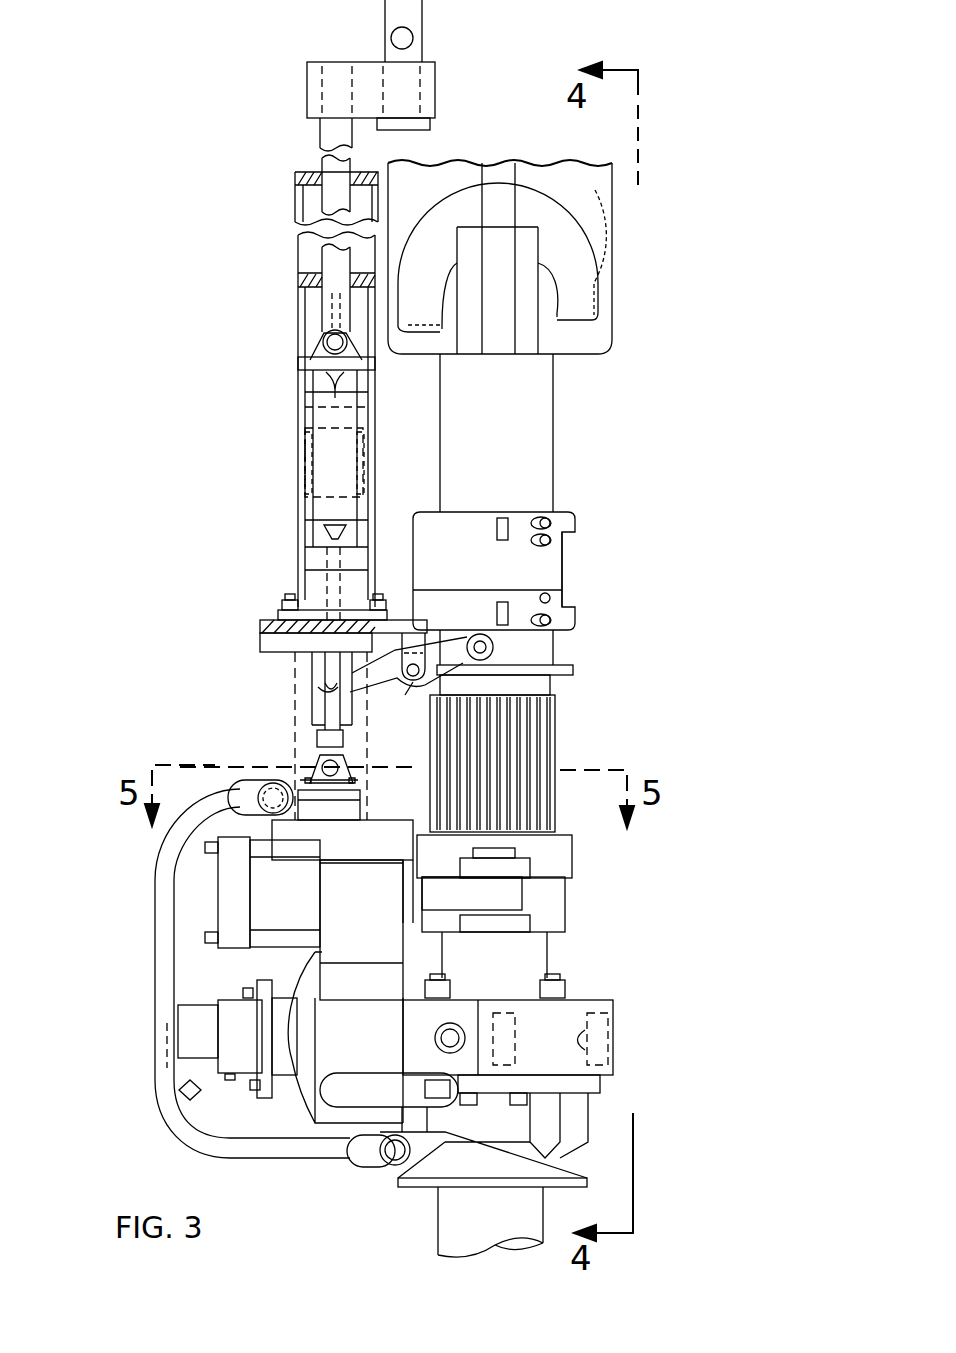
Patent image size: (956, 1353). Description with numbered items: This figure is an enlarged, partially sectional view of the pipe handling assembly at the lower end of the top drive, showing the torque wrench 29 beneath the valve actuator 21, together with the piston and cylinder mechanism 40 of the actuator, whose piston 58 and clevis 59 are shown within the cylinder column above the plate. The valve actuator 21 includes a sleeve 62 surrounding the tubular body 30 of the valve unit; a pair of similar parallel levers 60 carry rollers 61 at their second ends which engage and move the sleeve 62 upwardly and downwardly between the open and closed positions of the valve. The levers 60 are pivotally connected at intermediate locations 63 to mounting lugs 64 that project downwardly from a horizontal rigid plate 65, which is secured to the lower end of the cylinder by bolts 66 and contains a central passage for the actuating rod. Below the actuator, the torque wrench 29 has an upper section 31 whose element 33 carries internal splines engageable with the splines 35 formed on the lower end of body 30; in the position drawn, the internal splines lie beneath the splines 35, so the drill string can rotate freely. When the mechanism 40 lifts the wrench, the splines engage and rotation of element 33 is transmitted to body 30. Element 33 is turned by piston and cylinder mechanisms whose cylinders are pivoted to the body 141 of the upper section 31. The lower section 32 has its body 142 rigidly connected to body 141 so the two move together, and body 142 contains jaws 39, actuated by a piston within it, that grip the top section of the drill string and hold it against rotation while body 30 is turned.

The valve actuator 21 is at (640, 598).
The torque wrench 29 is at (125, 965).
The tubular body 30 is at (553, 422).
The upper section 31 is at (612, 897).
The lower section 32 is at (642, 1070).
The element 33 is at (573, 862).
The splines 35 is at (556, 738).
The jaws 39 is at (592, 1048).
The piston and cylinder mechanism 40 is at (235, 476).
The piston rod 58 is at (333, 576).
The clevis 59 is at (328, 694).
The levers 60 is at (377, 657).
The rollers 61 is at (494, 648).
The sleeve 62 is at (578, 528).
The intermediate locations 63 is at (418, 688).
The mounting lugs 64 is at (420, 643).
The plate 65 is at (262, 629).
The bolts 66 is at (283, 603).
The body 141 is at (557, 920).
The body 142 is at (613, 1003).